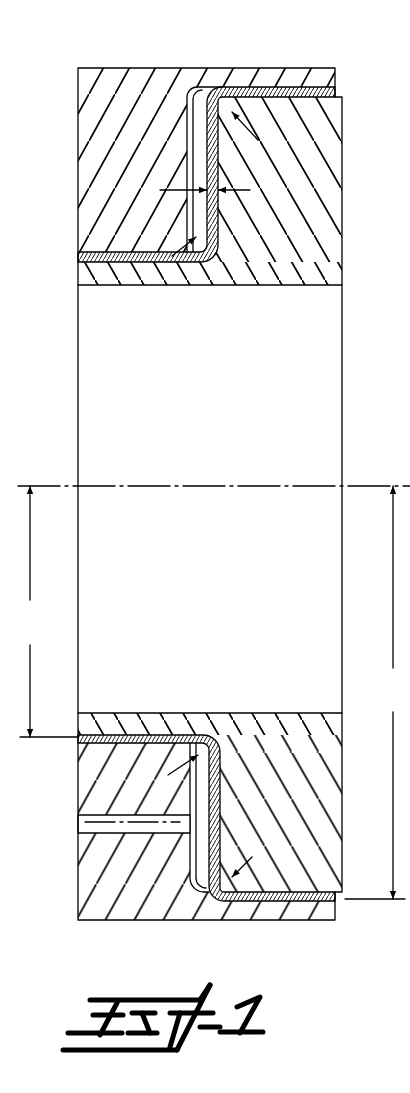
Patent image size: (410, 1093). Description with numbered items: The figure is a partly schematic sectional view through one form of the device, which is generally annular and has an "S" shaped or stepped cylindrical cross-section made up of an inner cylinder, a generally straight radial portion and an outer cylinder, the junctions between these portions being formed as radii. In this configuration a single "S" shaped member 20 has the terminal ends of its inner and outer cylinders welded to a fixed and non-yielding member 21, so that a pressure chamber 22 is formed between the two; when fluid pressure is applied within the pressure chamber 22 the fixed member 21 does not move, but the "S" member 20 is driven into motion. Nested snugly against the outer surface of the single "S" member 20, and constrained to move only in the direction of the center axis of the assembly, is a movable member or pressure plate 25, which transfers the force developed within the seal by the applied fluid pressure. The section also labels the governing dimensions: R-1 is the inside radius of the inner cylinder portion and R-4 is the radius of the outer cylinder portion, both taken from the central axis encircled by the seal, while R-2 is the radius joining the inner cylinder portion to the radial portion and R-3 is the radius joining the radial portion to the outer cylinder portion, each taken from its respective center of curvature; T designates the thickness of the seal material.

The single member 20 is at (140, 264).
The fixed and non-yielding member 21 is at (148, 96).
The pressure chamber 22 is at (199, 808).
The movable member or pressure plate 25 is at (344, 200).
The thickness of the seal material T is at (262, 190).
The inside radius of the inner cylinder portion R-1 is at (46, 611).
The radius joining the inner cylinder portion to the radial portion R-2 is at (176, 258).
The radius joining the radial portion to the outer cylinder portion R-3 is at (254, 88).
The radius of the outer cylinder portion R-4 is at (377, 692).